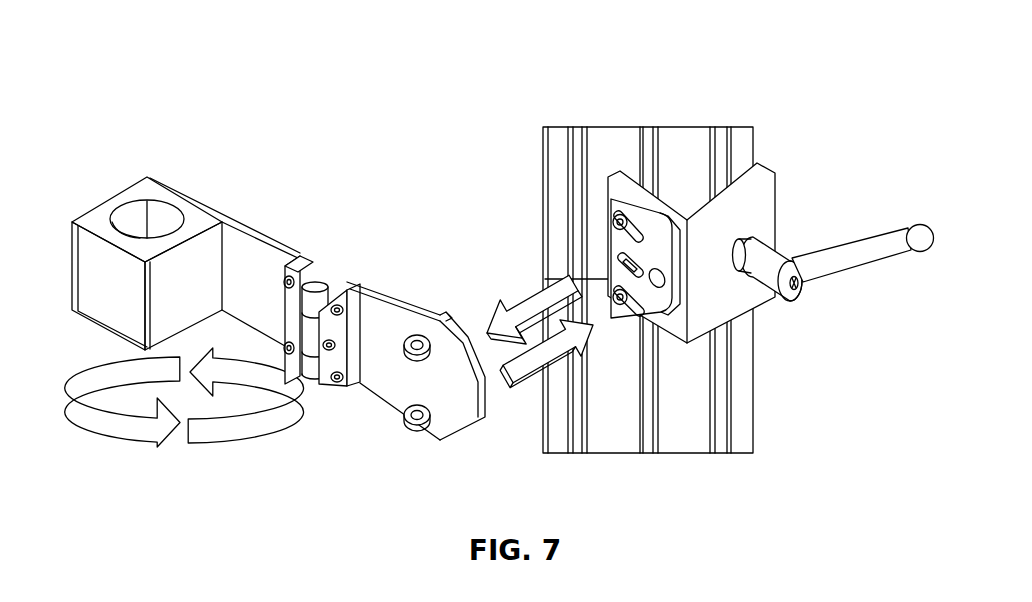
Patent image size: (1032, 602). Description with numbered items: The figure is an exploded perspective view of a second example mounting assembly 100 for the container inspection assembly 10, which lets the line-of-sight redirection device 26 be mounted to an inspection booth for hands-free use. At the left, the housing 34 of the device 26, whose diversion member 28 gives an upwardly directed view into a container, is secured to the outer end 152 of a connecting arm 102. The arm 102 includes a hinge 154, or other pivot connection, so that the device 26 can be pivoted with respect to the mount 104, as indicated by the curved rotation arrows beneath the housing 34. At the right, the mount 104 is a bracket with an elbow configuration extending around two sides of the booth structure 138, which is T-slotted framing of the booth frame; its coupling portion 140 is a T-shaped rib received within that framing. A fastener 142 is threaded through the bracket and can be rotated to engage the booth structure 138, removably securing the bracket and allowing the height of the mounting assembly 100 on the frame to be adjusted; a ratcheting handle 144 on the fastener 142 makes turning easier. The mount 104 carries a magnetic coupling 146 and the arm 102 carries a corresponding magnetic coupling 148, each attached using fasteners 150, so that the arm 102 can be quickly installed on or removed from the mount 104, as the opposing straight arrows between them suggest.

The container inspection assembly 10 is at (123, 45).
The line-of-sight redirection device 26 is at (157, 197).
The diversion member 28 is at (122, 228).
The housing 34 is at (88, 273).
The outer end 152 is at (189, 200).
The hinge 154 is at (327, 274).
The mounting assembly 100 is at (460, 156).
The connecting arm 102 is at (383, 383).
The magnetic coupling 148 is at (440, 328).
The fasteners 150 is at (409, 426).
The booth structure 138 is at (624, 138).
The coupling portion 140 is at (718, 183).
The mount 104 is at (760, 196).
The magnetic coupling 146 is at (643, 317).
The fastener 142 is at (798, 292).
The ratcheting handle 144 is at (870, 255).